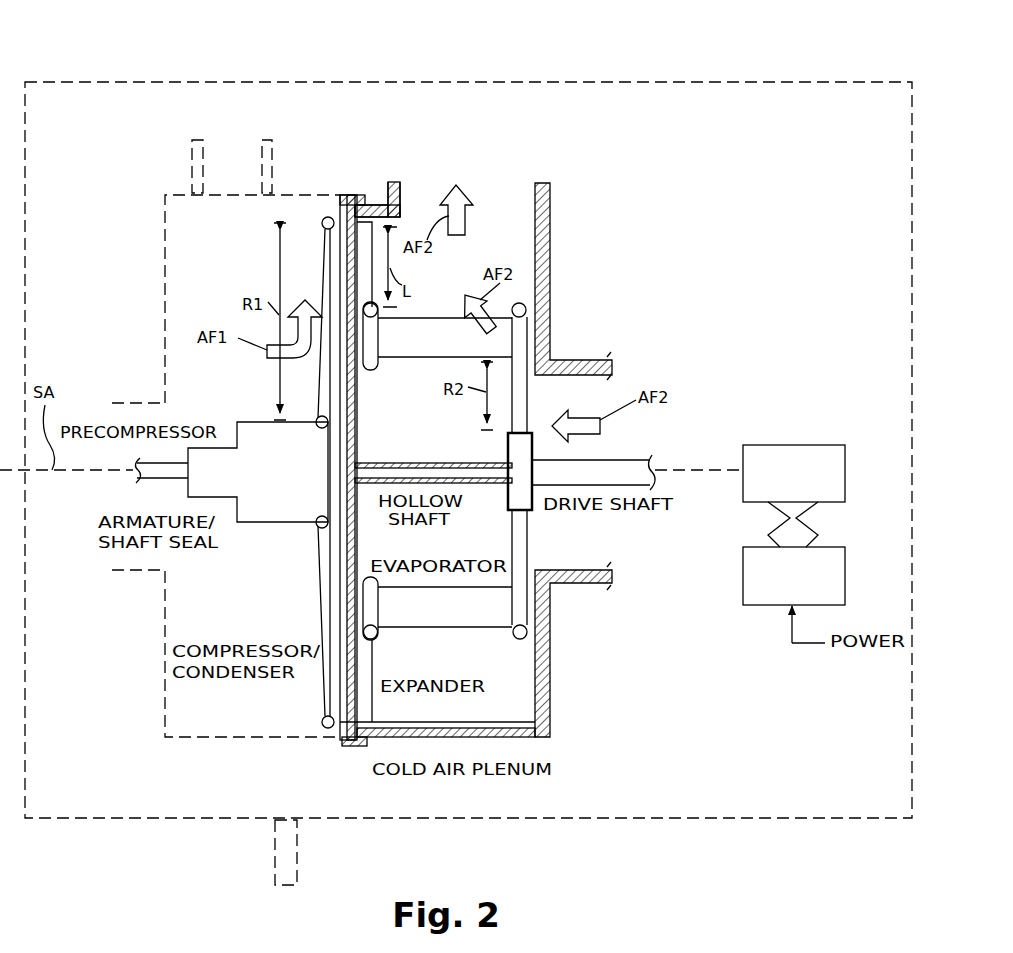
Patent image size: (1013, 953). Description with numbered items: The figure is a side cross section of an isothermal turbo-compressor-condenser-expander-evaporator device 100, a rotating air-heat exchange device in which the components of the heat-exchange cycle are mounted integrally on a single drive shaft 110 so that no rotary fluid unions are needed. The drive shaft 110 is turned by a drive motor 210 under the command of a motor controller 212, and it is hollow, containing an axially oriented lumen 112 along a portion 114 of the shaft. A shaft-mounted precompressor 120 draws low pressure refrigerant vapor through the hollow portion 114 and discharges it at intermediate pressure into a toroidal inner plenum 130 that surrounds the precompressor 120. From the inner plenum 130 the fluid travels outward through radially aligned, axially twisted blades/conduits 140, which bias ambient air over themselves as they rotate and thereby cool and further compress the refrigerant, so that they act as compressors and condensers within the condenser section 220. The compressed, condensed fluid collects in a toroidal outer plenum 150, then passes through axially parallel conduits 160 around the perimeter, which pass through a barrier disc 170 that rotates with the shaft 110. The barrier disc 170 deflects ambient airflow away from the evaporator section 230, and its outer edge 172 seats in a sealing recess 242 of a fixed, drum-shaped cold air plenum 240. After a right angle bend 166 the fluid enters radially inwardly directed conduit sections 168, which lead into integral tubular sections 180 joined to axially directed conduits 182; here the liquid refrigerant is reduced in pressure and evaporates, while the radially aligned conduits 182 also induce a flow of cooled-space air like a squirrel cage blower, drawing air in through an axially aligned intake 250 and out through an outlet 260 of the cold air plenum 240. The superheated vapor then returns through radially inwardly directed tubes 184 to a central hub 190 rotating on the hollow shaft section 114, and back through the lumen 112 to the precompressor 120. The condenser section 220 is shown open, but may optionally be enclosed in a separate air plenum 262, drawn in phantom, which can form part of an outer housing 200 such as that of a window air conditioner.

The isothermal turbo-compressor-condenser-expander-evaporator device 100 is at (571, 207).
The drive shaft 110 is at (634, 458).
The lumen 112 is at (368, 470).
The hollow portion of the shaft 114 is at (464, 450).
The precompressor 120 is at (262, 518).
The toroidal inner plenum 130 is at (316, 427).
The axially twisted blades/conduits 140 is at (323, 245).
The toroidal outer plenum 150 is at (322, 218).
The axially parallel conduits 160 is at (347, 195).
The right angle bend 166 is at (355, 722).
The radially inwardly directed conduit sections 168 is at (372, 262).
The barrier disc 170 is at (355, 408).
The outer edge of the barrier disc 172 is at (355, 195).
The integral tubular sections 180 is at (378, 343).
The axially directed conduits 182 is at (433, 322).
The radially inwardly directed tubes 184 is at (528, 392).
The central hub 190 is at (533, 460).
The outer housing 200 is at (792, 70).
The drive motor 210 is at (776, 495).
The motor controller 212 is at (776, 599).
The condenser section/space 220 is at (248, 253).
The evaporator section/space 230 is at (459, 363).
The cold air plenum 240 is at (533, 739).
The sealing recess 242 is at (350, 195).
The intake 250 is at (611, 550).
The outlet 260 is at (497, 192).
The air plenum 262 is at (165, 738).